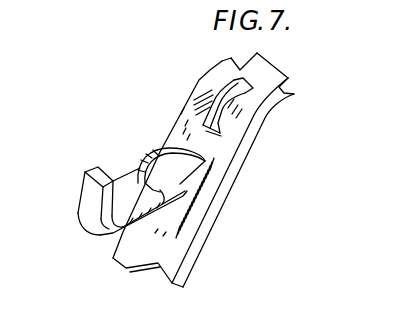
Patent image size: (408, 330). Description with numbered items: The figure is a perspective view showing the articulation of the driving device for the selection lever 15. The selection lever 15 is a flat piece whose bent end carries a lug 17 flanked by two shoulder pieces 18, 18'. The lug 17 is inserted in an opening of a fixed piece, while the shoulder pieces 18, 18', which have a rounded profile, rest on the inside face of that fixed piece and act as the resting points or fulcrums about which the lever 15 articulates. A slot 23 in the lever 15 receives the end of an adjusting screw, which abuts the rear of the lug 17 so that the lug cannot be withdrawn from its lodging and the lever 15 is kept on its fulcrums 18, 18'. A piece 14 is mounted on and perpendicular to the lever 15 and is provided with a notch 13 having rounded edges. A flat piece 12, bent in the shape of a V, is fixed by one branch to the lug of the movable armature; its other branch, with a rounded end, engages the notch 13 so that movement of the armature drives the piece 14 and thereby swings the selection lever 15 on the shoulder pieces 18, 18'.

The flat piece 12 is at (93, 192).
The notch 13 is at (158, 196).
The piece 14 is at (163, 168).
The selection lever 15 is at (250, 123).
The lug 17 is at (268, 64).
The shoulder piece 18 is at (244, 52).
The shoulder piece 18' is at (299, 83).
The slot 23 is at (212, 98).